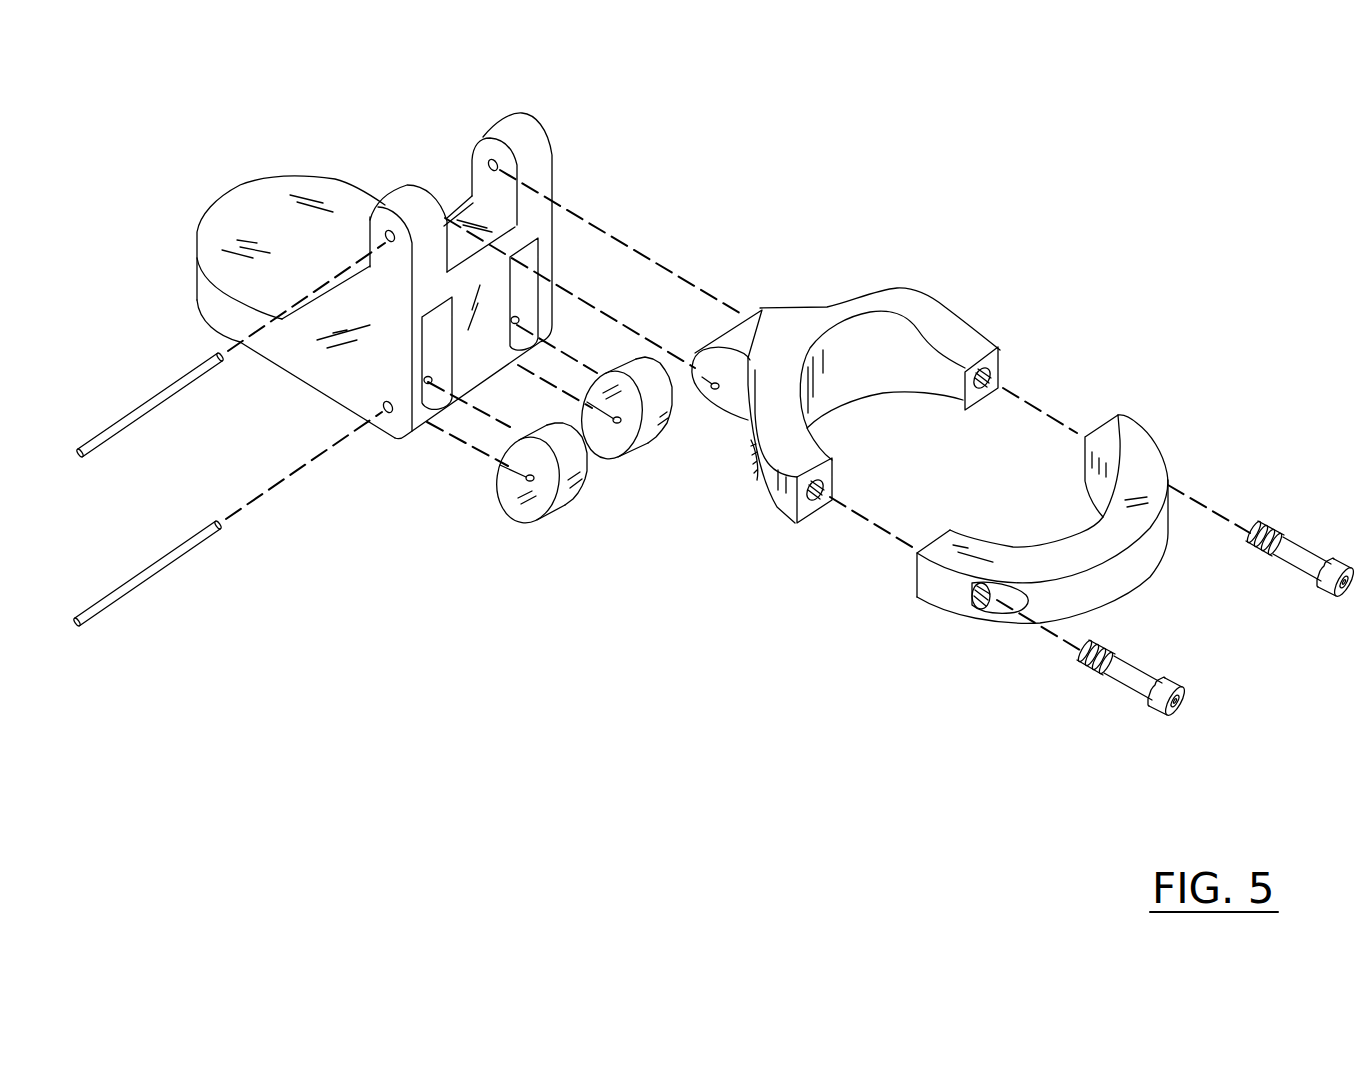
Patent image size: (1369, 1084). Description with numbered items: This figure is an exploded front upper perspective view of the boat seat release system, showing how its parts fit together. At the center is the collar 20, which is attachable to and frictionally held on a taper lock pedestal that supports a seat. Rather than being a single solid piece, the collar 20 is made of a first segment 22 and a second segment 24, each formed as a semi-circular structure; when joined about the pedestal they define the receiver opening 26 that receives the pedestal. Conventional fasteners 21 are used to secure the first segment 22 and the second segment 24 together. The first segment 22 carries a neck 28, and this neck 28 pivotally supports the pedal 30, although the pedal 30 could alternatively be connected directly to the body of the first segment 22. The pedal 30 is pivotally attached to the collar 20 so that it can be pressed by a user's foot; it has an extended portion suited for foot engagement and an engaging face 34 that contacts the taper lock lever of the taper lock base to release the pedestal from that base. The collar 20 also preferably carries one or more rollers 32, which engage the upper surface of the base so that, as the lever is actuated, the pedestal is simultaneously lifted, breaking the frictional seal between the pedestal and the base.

The collar 20 is at (928, 289).
The fasteners 21 is at (1144, 682).
The first segment 22 is at (943, 325).
The second segment 24 is at (1140, 450).
The receiver opening 26 is at (1102, 525).
The neck 28 is at (917, 342).
The pedal 30 is at (258, 210).
The rollers 32 is at (657, 437).
The engaging face 34 is at (478, 378).